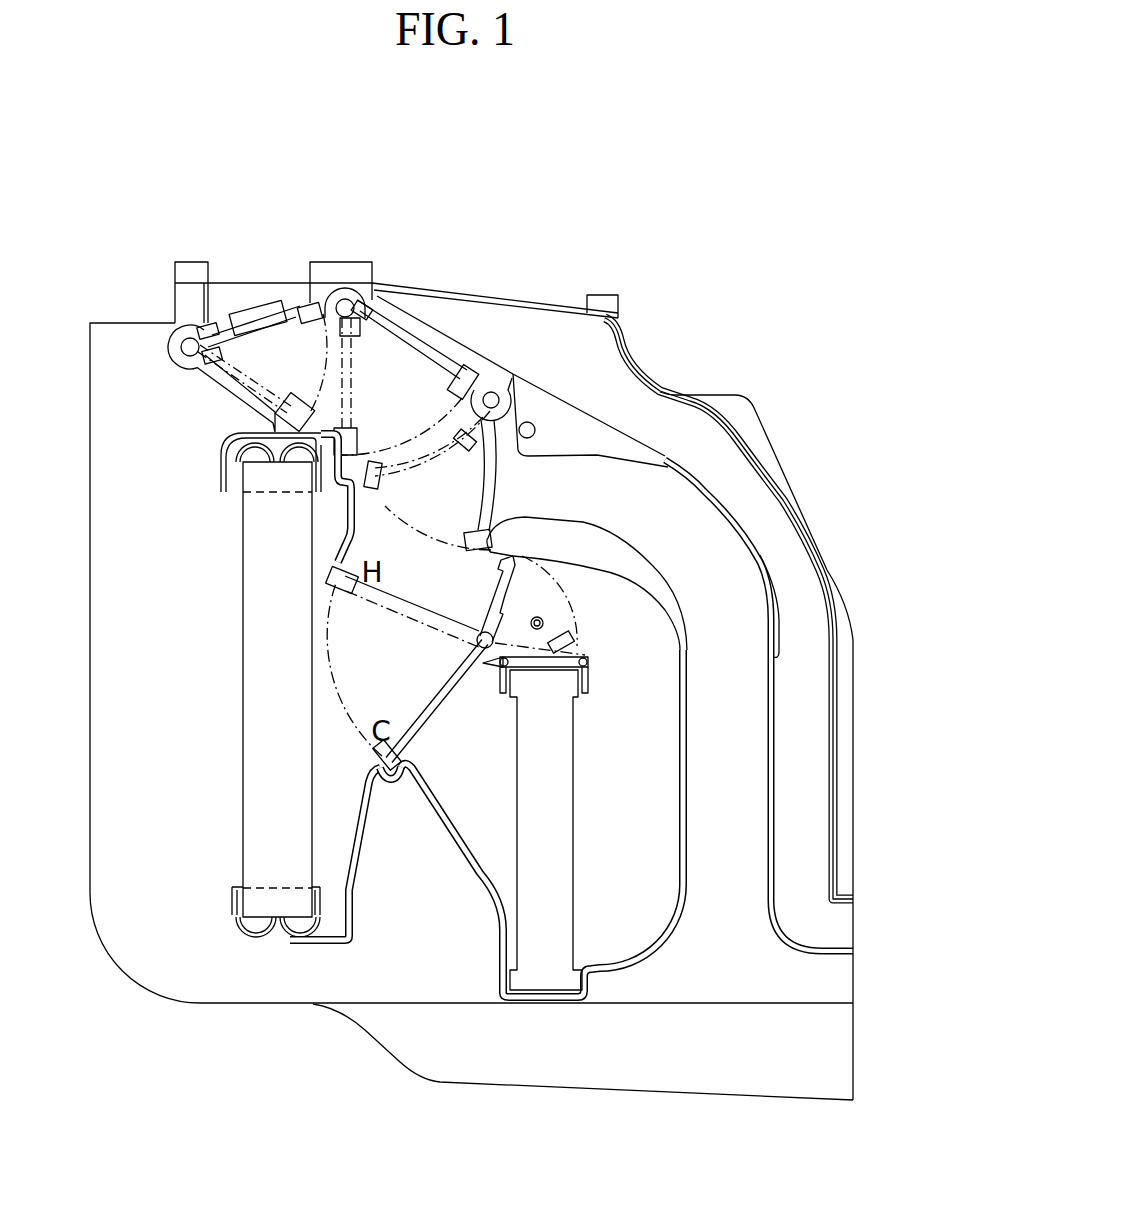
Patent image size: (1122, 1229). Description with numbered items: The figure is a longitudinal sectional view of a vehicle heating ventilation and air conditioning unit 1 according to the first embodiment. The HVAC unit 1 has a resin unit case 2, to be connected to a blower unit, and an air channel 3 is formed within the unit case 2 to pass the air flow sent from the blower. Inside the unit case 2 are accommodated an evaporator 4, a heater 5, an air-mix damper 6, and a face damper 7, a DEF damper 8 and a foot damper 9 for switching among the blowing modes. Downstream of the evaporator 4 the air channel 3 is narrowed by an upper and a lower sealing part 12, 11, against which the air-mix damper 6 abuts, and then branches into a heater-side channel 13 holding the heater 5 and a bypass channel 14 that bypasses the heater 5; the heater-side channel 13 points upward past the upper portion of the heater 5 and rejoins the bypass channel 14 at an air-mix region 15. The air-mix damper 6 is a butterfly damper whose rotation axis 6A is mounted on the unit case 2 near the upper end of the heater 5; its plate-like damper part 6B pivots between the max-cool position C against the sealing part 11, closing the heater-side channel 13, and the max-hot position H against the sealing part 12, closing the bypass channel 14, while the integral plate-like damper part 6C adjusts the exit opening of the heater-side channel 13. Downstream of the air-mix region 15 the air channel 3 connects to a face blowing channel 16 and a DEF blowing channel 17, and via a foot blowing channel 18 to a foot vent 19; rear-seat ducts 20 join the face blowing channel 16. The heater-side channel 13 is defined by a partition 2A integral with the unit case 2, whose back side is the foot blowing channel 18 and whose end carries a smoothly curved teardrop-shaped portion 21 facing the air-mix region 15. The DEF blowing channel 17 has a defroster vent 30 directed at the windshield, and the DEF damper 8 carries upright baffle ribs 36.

The vehicle heating ventilation and air conditioning unit 1 is at (674, 232).
The unit case 2 is at (315, 960).
The partition 2A is at (690, 795).
The air channel 3 is at (325, 730).
The evaporator 4 is at (250, 589).
The heater 5 is at (565, 750).
The air-mix damper 6 is at (418, 701).
The rotation axis 6A is at (476, 640).
The plate-like damper part 6B is at (420, 735).
The plate-like damper part 6C is at (515, 585).
The face damper 7 is at (415, 330).
The DEF damper 8 is at (294, 305).
The foot damper 9 is at (500, 487).
The sealing part 11 is at (398, 782).
The sealing part 12 is at (345, 566).
The heater-side channel 13 is at (642, 935).
The bypass channel 14 is at (370, 607).
The air-mix region 15 is at (428, 565).
The face blowing channel 16 is at (445, 352).
The DEF blowing channel 17 is at (233, 305).
The foot blowing channel 18 is at (740, 545).
The foot vent 19 is at (738, 965).
The rear-seat duct 20 is at (688, 425).
The teardrop-shaped portion 21 is at (600, 548).
The defroster vent 30 is at (480, 875).
The baffle ribs 36 is at (256, 305).